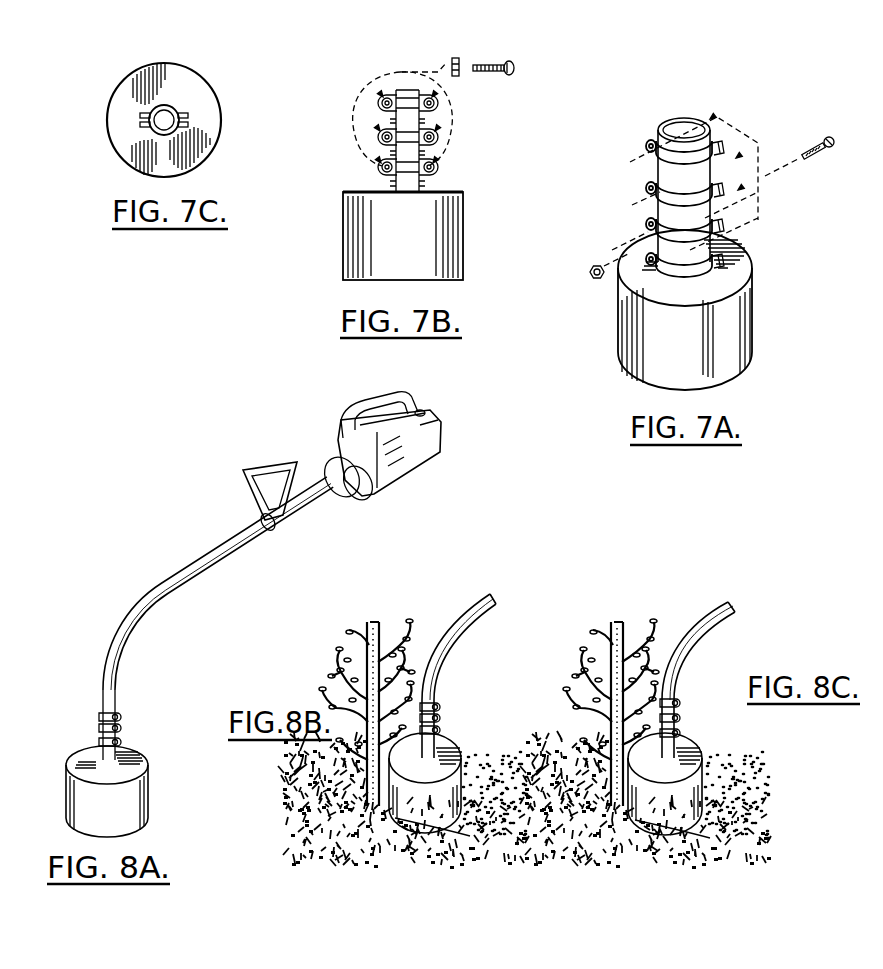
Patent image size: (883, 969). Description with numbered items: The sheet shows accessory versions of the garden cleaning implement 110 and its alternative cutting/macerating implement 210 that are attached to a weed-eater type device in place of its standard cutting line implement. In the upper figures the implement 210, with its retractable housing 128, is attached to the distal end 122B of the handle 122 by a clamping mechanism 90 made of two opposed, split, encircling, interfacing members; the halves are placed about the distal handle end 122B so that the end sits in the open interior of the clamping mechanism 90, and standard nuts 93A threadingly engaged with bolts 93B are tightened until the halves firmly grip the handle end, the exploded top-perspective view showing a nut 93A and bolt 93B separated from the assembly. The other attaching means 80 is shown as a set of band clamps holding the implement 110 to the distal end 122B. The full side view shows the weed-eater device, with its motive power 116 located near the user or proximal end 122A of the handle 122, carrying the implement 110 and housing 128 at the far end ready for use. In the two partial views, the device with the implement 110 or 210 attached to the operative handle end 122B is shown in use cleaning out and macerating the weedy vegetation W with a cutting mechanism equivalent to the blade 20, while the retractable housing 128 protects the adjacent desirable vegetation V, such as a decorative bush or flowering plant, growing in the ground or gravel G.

In FIG. 8B, the blade 20 is at (470, 840).
In FIG. 8C, the blade 20 is at (675, 850).
In FIG. 8A, the attaching means 80 is at (90, 728).
In FIG. 8B, the attaching means 80 is at (440, 712).
In FIG. 8C, the attaching means 80 is at (683, 708).
In FIG. 7A, the clamping mechanism 90 is at (673, 113).
In FIG. 7B, the nut 93A is at (454, 57).
In FIG. 7A, the nut 93A is at (600, 283).
In FIG. 7B, the bolt 93B is at (486, 62).
In FIG. 7A, the bolt 93B is at (812, 135).
In FIG. 8A, the garden cleaning implement 110 is at (122, 752).
In FIG. 8B, the garden cleaning implement 110 is at (463, 722).
In FIG. 8A, the motive power 116 is at (448, 416).
In FIG. 8A, the handle 122 is at (310, 541).
In FIG. 8B, the handle 122 is at (447, 640).
In FIG. 8C, the handle 122 is at (705, 648).
In FIG. 8A, the proximal end 122A is at (328, 470).
In FIG. 8A, the distal end 122B is at (103, 706).
In FIG. 7C, the retractable housing 128 is at (212, 142).
In FIG. 7B, the retractable housing 128 is at (452, 248).
In FIG. 7A, the retractable housing 128 is at (752, 285).
In FIG. 8A, the retractable housing 128 is at (132, 800).
In FIG. 8B, the retractable housing 128 is at (458, 812).
In FIG. 8C, the retractable housing 128 is at (700, 806).
In FIG. 7C, the cutting/macerating implement 210 is at (184, 109).
In FIG. 7B, the cutting/macerating implement 210 is at (464, 163).
In FIG. 7A, the cutting/macerating implement 210 is at (723, 174).
In FIG. 8C, the cutting/macerating implement 210 is at (717, 760).
In FIG. 8B, the desirable vegetation V is at (368, 656).
In FIG. 8C, the desirable vegetation V is at (600, 644).
In FIG. 8B, the gravel G is at (475, 788).
In FIG. 8C, the gravel G is at (728, 792).
In FIG. 8B, the weedy vegetation W is at (340, 858).
In FIG. 8C, the weedy vegetation W is at (585, 856).